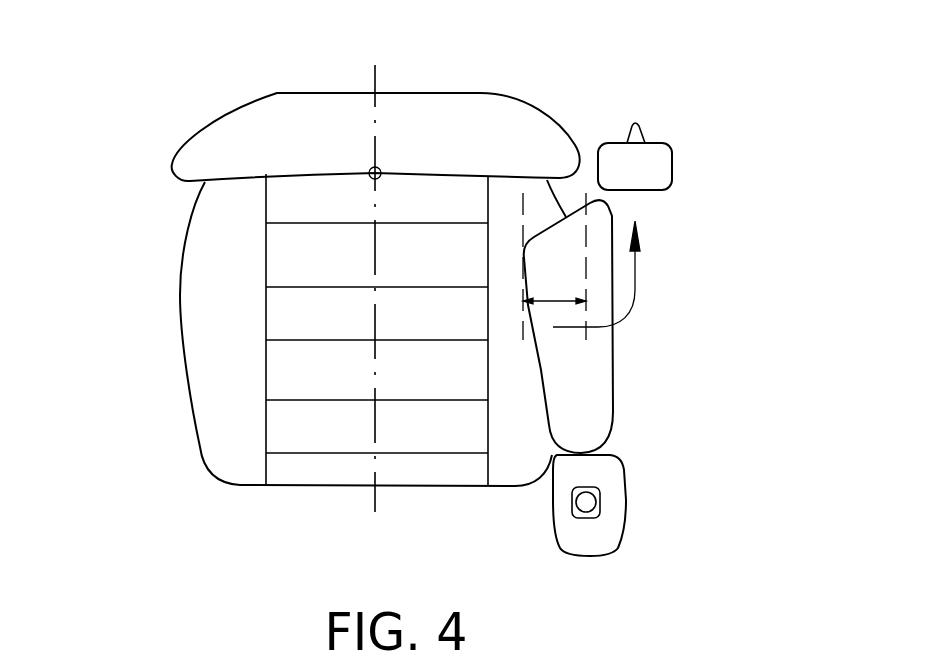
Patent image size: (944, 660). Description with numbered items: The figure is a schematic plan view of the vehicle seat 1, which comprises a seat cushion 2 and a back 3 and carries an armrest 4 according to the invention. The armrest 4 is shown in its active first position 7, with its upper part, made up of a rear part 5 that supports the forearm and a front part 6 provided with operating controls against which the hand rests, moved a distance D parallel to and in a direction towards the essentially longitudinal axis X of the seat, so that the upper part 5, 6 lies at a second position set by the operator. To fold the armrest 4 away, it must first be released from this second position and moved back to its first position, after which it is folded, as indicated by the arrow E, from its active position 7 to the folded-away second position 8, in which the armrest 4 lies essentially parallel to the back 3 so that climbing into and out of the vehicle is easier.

The vehicle seat 1 is at (410, 278).
The seat cushion 2 is at (193, 327).
The back 3 is at (182, 163).
The armrest 4 is at (646, 374).
The rear part 5 is at (608, 418).
The front part 6 is at (608, 470).
The active first position 7 is at (646, 323).
The folded-away second position 8 is at (679, 104).